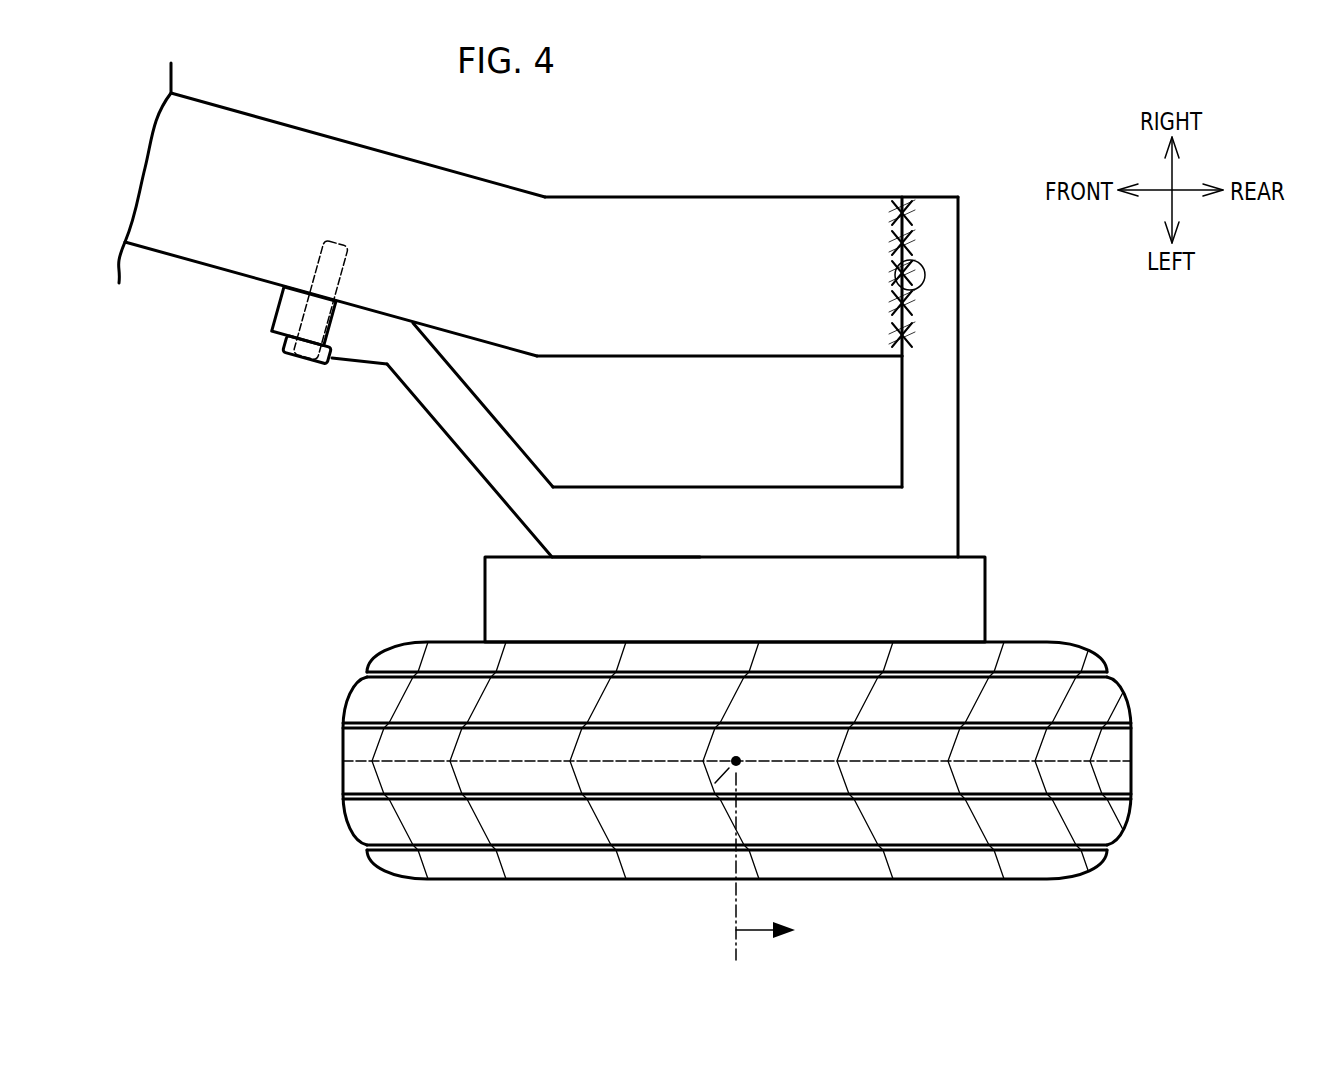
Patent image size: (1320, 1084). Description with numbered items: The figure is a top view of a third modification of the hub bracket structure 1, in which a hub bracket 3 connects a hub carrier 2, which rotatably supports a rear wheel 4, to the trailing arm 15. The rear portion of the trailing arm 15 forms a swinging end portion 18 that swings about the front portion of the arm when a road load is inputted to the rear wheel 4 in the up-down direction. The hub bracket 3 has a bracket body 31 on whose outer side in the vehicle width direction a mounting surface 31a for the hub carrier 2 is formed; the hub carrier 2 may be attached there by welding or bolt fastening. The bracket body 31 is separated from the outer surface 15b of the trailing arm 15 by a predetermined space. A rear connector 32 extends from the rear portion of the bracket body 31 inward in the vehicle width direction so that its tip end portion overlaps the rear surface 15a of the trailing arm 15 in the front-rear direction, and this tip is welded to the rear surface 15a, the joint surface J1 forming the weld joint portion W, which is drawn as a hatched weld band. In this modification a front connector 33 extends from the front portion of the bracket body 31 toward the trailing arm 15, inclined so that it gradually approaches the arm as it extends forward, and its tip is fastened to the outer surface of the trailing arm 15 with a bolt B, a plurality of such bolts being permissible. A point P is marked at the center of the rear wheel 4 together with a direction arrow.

The hub bracket structure 1 is at (658, 508).
The hub carrier 2 is at (987, 602).
The hub bracket 3 is at (645, 383).
The rear wheel 4 is at (1118, 687).
The trailing arm 15 is at (747, 246).
The rear surface of the trailing arm 15a is at (897, 290).
The outer surface of the trailing arm 15b is at (648, 358).
The swinging end portion 18 is at (752, 170).
The bracket body 31 is at (772, 520).
The mounting surface 31a is at (648, 557).
The rear connector 32 is at (923, 437).
The front connector 33 is at (470, 417).
The bolt B is at (306, 360).
The weld joint portion W is at (922, 227).
The joint surface J1 is at (913, 323).
The pivot point P is at (706, 797).